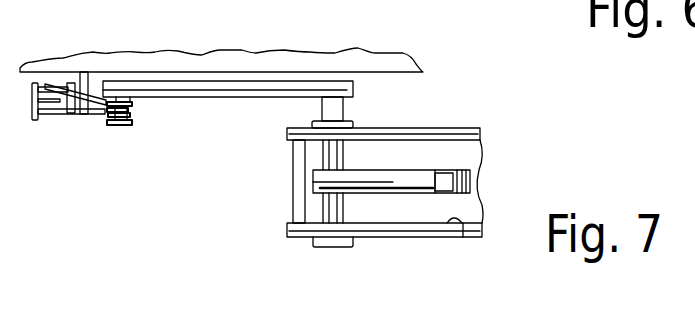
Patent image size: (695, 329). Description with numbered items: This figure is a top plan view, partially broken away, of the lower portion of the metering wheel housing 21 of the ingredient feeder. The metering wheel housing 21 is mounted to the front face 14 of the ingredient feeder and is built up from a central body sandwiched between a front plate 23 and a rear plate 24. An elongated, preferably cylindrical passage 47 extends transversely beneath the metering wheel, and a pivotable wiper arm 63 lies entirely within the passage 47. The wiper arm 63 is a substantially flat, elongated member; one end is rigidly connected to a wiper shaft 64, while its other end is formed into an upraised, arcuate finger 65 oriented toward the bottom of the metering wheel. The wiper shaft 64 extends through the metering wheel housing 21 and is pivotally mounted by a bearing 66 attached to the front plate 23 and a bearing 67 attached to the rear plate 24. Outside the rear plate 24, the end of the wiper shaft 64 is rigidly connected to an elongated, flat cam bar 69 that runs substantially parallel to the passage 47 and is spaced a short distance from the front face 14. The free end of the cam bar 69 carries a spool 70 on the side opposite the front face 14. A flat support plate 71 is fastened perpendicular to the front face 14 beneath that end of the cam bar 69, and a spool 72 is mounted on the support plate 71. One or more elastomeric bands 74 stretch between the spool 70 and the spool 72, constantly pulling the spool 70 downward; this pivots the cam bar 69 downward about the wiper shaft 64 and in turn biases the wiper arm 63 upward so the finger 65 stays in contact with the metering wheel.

The front face 14 is at (412, 76).
The support plate 71 is at (96, 72).
The spool 72 is at (35, 122).
The elastomeric bands 74 is at (97, 116).
The spool 70 is at (122, 128).
The cam bar 69 is at (167, 100).
The wiper shaft 64 is at (344, 108).
The bearing 67 is at (314, 126).
The rear plate 24 is at (287, 134).
The metering wheel housing 21 is at (293, 193).
The front plate 23 is at (288, 238).
The bearing 66 is at (352, 244).
The wiper arm 63 is at (400, 194).
The finger 65 is at (457, 171).
The passage 47 is at (463, 238).